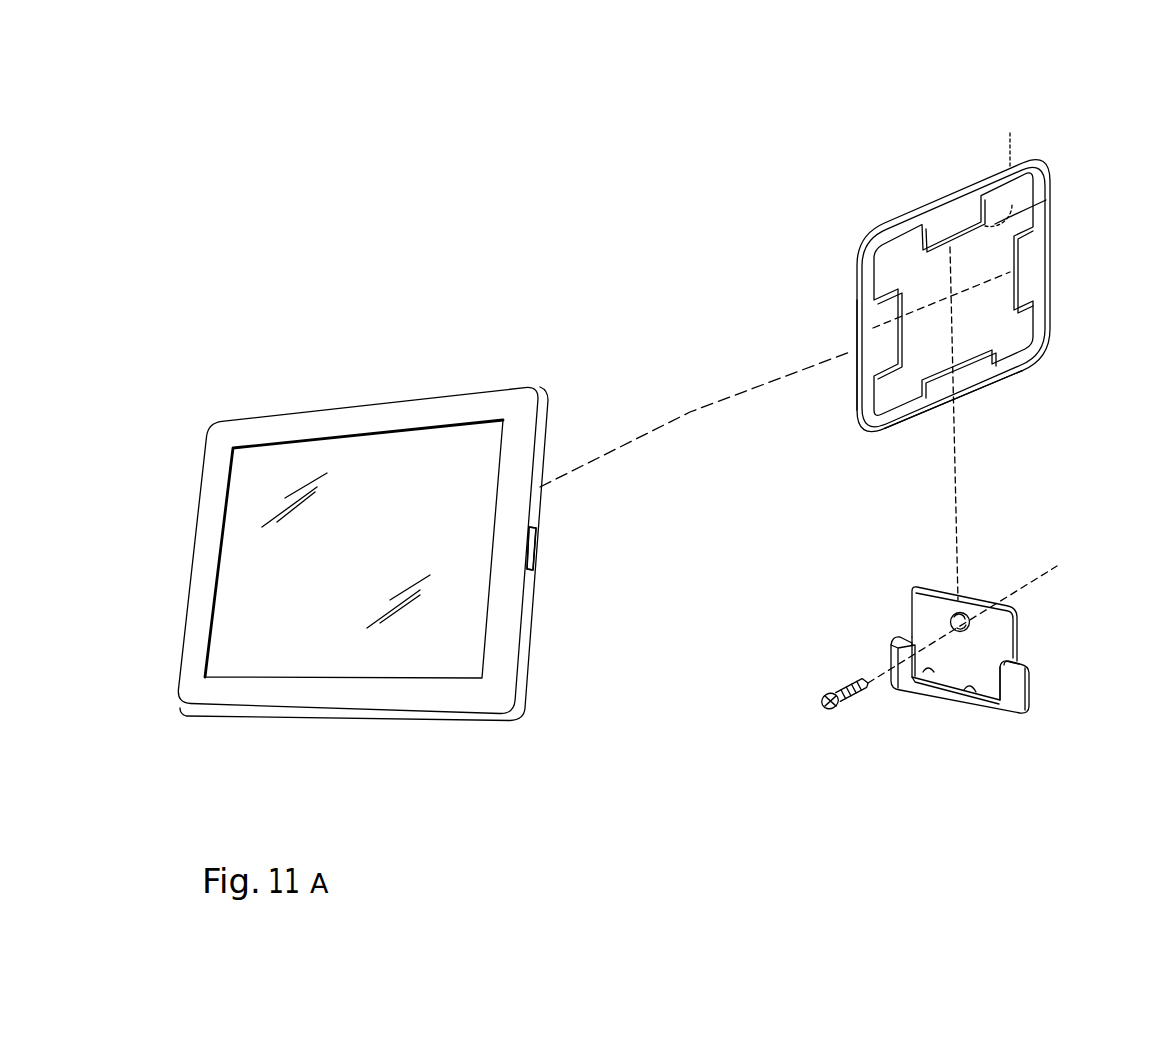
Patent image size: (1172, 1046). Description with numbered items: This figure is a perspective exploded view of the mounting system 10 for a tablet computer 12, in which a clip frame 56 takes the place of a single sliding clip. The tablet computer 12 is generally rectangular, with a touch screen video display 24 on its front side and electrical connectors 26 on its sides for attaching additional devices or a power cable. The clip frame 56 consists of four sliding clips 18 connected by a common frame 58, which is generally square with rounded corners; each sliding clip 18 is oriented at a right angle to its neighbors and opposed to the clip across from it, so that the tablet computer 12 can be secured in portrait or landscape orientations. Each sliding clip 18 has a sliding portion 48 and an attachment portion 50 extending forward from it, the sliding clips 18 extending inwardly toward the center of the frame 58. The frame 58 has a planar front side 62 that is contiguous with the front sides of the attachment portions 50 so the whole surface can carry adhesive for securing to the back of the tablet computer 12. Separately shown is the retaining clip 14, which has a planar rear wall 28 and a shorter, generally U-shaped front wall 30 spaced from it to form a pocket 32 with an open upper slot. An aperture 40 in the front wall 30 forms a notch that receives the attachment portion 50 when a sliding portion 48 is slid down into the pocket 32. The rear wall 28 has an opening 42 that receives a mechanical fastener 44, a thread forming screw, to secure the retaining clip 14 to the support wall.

The mounting system 10 is at (965, 687).
The tablet computer 12 is at (400, 722).
The retaining clip 14 is at (1030, 716).
The sliding clip 18 is at (892, 232).
The touch screen video display 24 is at (448, 653).
The electrical connectors 26 is at (537, 552).
The rear wall 28 is at (964, 624).
The front wall 30 is at (955, 703).
The pocket 32 is at (912, 705).
The aperture 40 is at (973, 693).
The opening 42 is at (948, 622).
The mechanical fastener 44 is at (850, 703).
The sliding portion 48 is at (1009, 133).
The attachment portion 50 is at (1046, 200).
The clip frame 56 is at (978, 291).
The frame 58 is at (903, 425).
The planar front side 62 is at (865, 382).